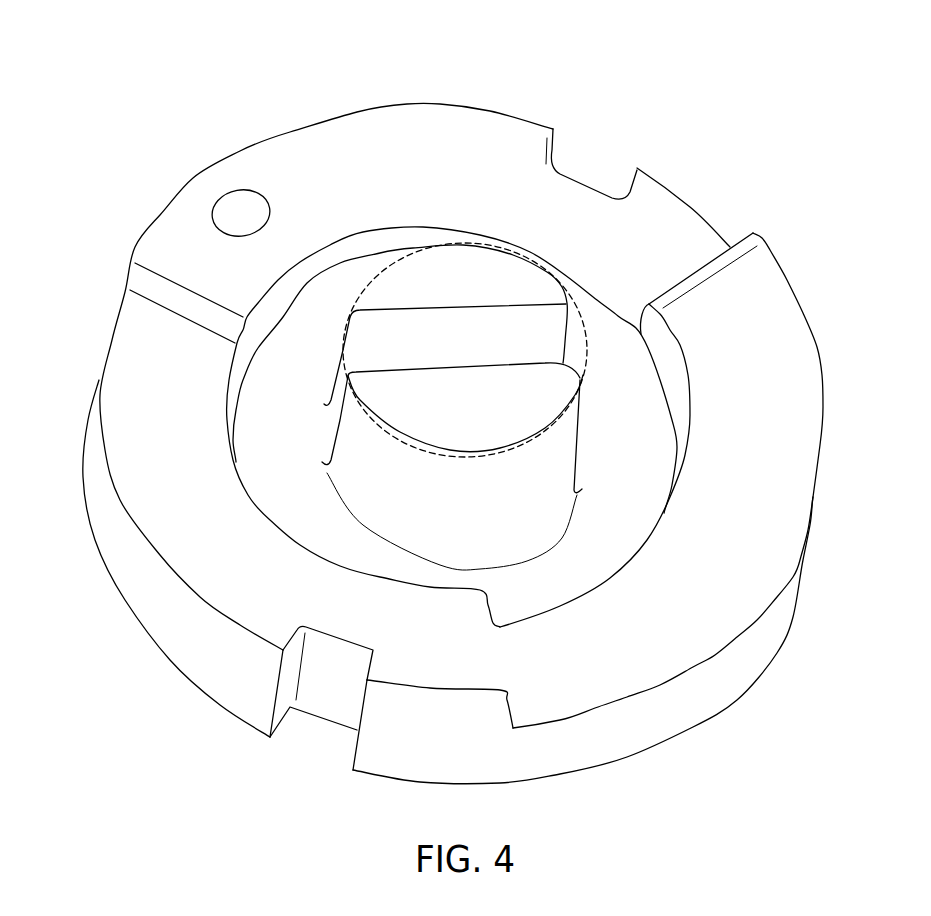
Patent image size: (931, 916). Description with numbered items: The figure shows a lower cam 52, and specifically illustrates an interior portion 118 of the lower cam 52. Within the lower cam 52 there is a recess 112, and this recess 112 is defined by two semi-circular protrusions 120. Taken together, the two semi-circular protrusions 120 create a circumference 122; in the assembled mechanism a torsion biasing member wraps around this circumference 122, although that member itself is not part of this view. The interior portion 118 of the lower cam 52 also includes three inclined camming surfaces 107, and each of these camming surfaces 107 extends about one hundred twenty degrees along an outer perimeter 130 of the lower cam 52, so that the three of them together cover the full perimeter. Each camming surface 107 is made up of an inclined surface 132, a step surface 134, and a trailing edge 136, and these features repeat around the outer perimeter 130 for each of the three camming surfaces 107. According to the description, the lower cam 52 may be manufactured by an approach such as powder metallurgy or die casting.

The lower cam 52 is at (247, 68).
The inclined camming surfaces 107 is at (389, 128).
The recess 112 is at (499, 323).
The interior portion 118 is at (760, 168).
The semi-circular protrusions 120 is at (468, 288).
The circumference 122 is at (578, 300).
The outer perimeter 130 is at (193, 181).
The inclined surface 132 is at (472, 130).
The step surface 134 is at (158, 262).
The trailing edge 136 is at (699, 238).